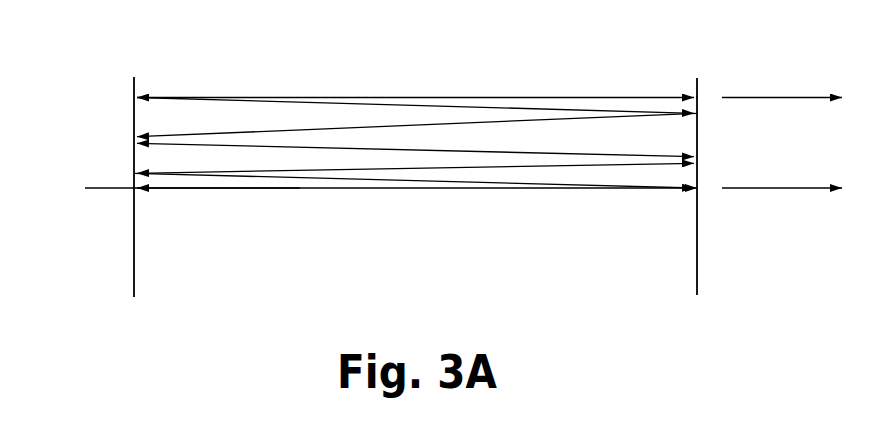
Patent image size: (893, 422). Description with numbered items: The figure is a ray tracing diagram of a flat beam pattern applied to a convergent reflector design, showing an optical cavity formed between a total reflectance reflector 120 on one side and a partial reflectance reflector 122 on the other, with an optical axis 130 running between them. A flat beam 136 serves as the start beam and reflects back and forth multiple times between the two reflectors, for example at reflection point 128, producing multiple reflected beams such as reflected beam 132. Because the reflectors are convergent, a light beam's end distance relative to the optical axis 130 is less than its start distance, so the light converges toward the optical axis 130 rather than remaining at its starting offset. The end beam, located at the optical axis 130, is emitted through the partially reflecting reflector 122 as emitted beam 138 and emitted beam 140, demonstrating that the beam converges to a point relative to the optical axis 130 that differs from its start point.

The total reflectance reflector 120 is at (135, 272).
The partial reflectance reflector 122 is at (697, 275).
The reflection point 128 is at (134, 97).
The optical axis 130 is at (170, 188).
The reflected beam 132 is at (345, 128).
The flat beam 136 is at (697, 97).
The emitted beam 138 is at (732, 185).
The emitted beam 140 is at (790, 93).